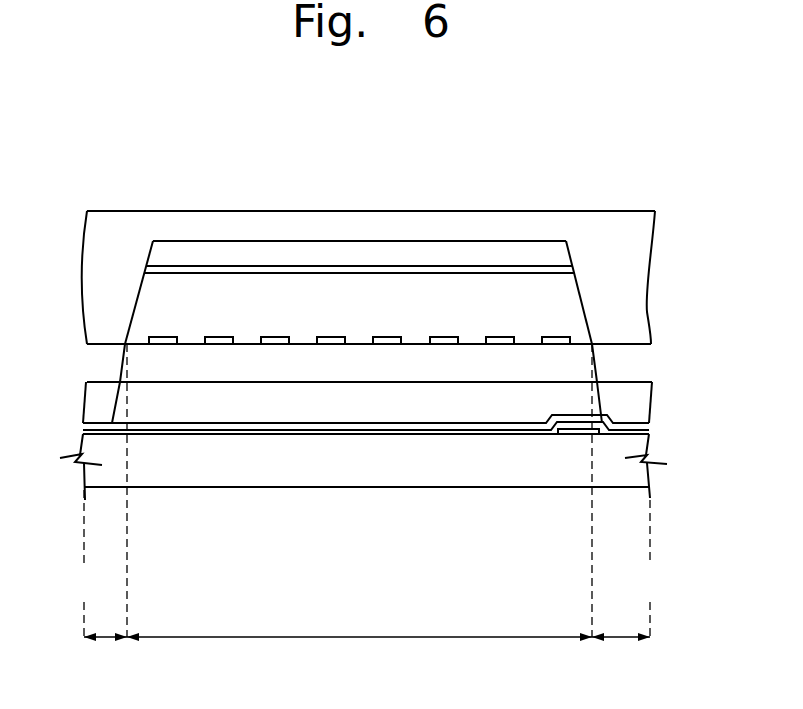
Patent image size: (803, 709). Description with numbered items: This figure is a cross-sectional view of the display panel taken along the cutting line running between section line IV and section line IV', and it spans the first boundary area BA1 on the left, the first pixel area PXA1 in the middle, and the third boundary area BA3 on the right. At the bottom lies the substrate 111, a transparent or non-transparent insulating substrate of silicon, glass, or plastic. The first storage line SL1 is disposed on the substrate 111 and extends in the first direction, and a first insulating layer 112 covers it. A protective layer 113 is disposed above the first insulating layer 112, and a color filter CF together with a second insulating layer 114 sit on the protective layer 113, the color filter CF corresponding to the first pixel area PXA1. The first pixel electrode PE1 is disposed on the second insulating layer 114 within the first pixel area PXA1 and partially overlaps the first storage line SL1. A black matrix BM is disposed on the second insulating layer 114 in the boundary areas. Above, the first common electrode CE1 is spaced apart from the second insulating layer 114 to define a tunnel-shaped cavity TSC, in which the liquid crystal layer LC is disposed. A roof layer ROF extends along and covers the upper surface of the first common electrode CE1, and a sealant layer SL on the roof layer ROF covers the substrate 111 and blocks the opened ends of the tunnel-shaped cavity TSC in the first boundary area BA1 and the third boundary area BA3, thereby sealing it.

The sealant layer SL is at (642, 275).
The tunnel-shaped cavity TSC is at (396, 295).
The roof layer ROF is at (530, 250).
The first common electrode CE1 is at (473, 270).
The liquid crystal layer LC is at (262, 290).
The first pixel electrode PE1 is at (274, 344).
The black matrix BM is at (648, 365).
The color filter CF is at (490, 402).
The second insulating layer 114 is at (640, 397).
The protective layer 113 is at (637, 423).
The first insulating layer 112 is at (637, 432).
The first storage line SL1 is at (575, 434).
The substrate 111 is at (640, 480).
The section line IV is at (86, 563).
The section line IV' is at (652, 568).
The first boundary area BA1 is at (105, 506).
The first pixel area PXA1 is at (359, 506).
The third boundary area BA3 is at (621, 650).